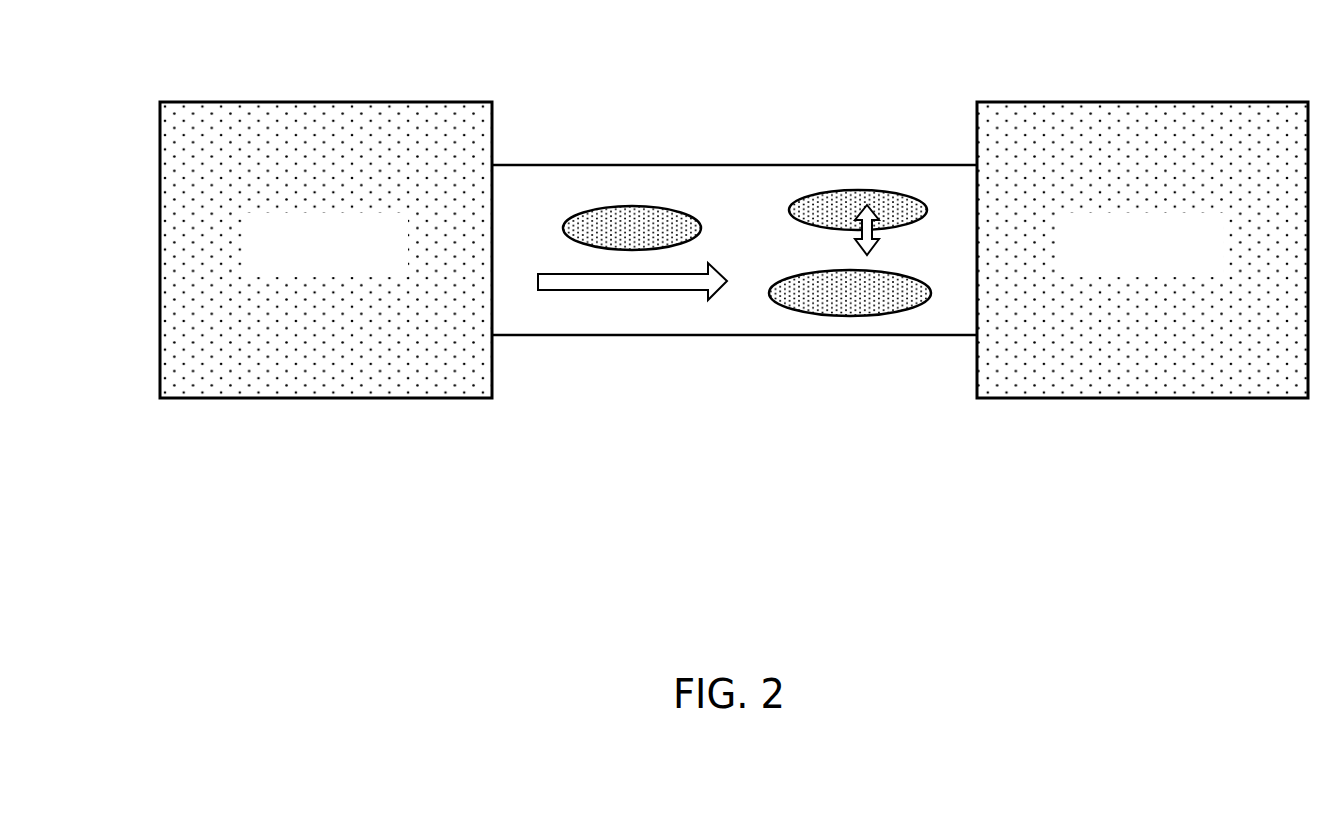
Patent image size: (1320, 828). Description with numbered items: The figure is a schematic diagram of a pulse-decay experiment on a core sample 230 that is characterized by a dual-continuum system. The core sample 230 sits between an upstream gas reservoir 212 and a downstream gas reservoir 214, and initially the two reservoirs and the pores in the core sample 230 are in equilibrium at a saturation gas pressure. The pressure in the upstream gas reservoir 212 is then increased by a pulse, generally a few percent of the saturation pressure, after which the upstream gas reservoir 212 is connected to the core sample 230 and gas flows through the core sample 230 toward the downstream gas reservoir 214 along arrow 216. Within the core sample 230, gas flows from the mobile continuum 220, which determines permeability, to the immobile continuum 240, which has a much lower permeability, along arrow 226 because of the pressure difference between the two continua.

The upstream gas reservoir 212 is at (355, 258).
The downstream gas reservoir 214 is at (1172, 258).
The mobile continuum 220 is at (533, 198).
The core sample 230 is at (743, 192).
The arrow 226 is at (908, 197).
The immobile continuum 240 is at (847, 318).
The arrow 216 is at (648, 290).